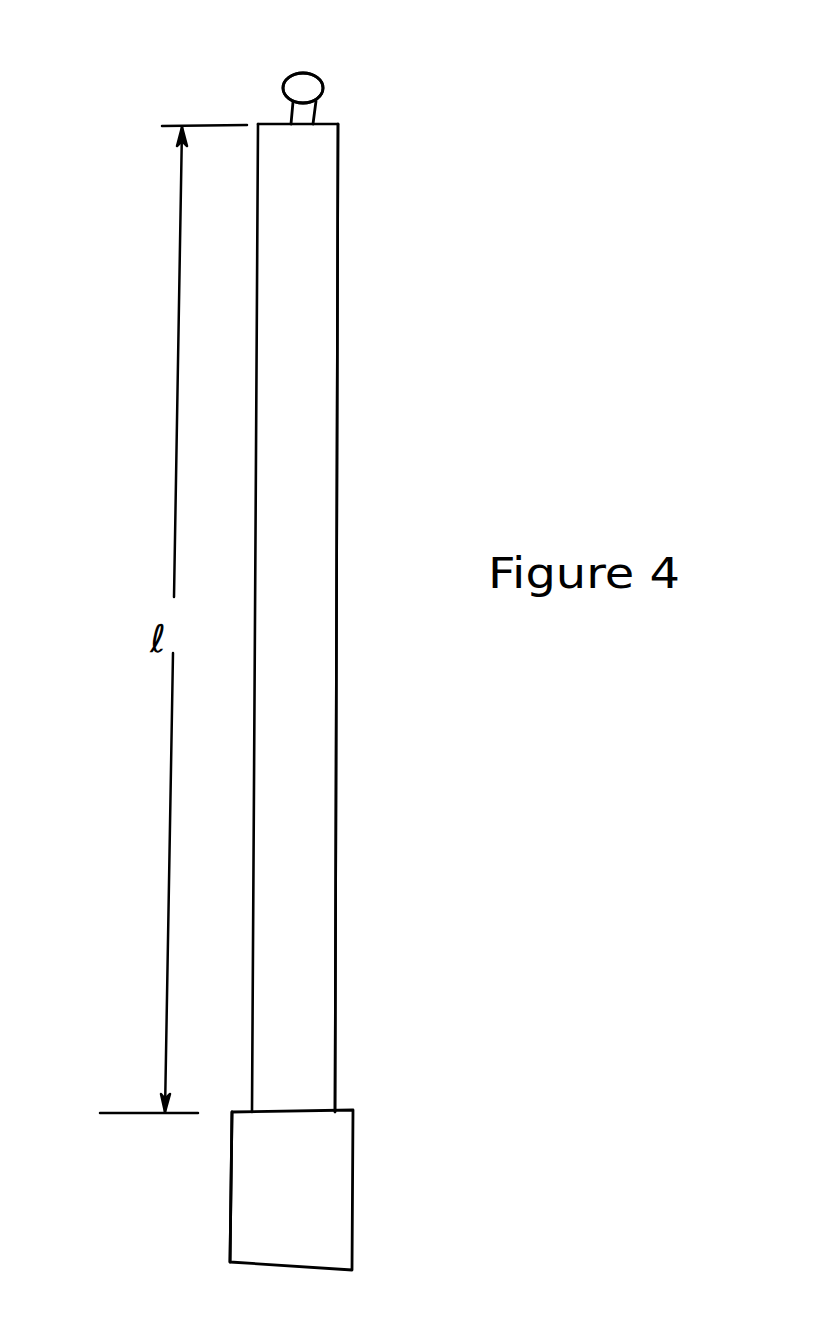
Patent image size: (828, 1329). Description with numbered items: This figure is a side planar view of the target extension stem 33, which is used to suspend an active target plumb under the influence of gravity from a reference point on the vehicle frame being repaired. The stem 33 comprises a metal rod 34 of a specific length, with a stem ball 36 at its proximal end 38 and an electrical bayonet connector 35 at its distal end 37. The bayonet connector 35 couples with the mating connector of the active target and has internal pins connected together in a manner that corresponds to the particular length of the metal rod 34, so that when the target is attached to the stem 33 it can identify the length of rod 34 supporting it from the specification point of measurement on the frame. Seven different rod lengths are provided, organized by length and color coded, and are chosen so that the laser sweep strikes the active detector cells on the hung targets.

The target extension stem 33 is at (340, 897).
The metal rod 34 is at (317, 412).
The electrical bayonet connector 35 is at (333, 1177).
The stem ball 36 is at (317, 80).
The distal end 37 is at (208, 1190).
The proximal end 38 is at (353, 88).